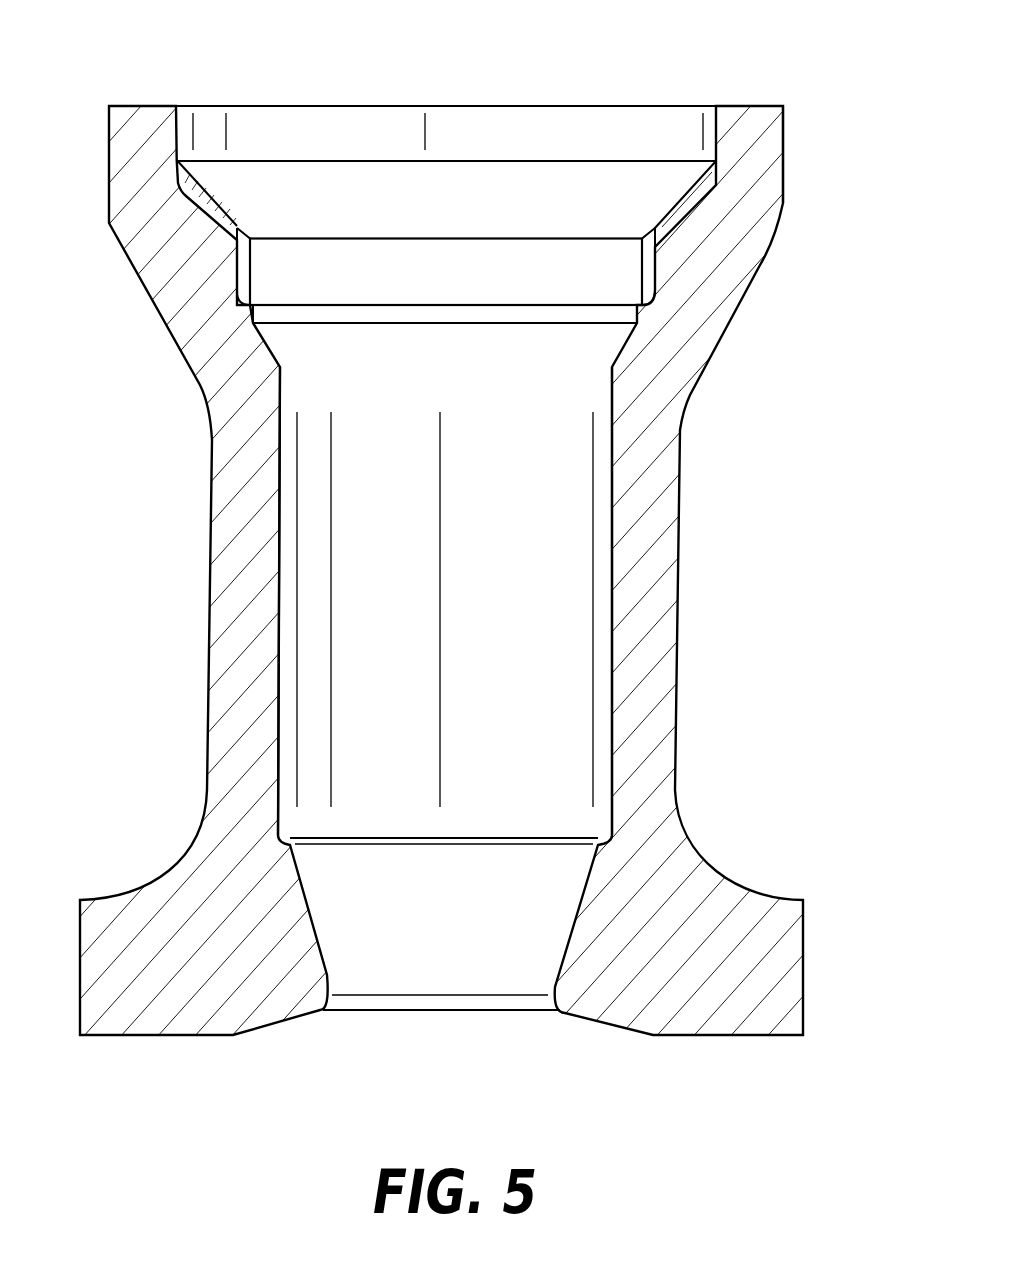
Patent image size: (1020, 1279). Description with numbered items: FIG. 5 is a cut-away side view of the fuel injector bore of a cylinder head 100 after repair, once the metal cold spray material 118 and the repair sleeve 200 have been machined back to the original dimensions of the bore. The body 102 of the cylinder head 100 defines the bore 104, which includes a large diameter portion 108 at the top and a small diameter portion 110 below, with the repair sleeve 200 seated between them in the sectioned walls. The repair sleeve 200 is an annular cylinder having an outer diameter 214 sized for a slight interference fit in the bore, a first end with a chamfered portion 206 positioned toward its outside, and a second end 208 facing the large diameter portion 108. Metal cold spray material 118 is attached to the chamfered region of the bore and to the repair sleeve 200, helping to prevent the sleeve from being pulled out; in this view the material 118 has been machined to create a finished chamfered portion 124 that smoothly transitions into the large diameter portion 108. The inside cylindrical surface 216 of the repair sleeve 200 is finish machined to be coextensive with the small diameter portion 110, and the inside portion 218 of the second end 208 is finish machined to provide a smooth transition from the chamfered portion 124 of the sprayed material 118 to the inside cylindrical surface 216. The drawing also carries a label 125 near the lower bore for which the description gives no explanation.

The cylinder head 100 is at (720, 88).
The body 102 is at (446, 133).
The bore 104 is at (270, 128).
The large diameter portion 108 is at (717, 145).
The small diameter portion 110 is at (667, 310).
The metal cold spray material 118 is at (693, 200).
The finished machined chamfered portion 124 is at (680, 200).
The lower bore / nose 125 is at (543, 903).
The repair sleeve 200 is at (410, 226).
The chamfered portion 206 is at (652, 283).
The second end 208 is at (667, 243).
The outer diameter 214 is at (237, 264).
The inside cylindrical surface 216 is at (250, 272).
The inside portion 218 is at (645, 232).